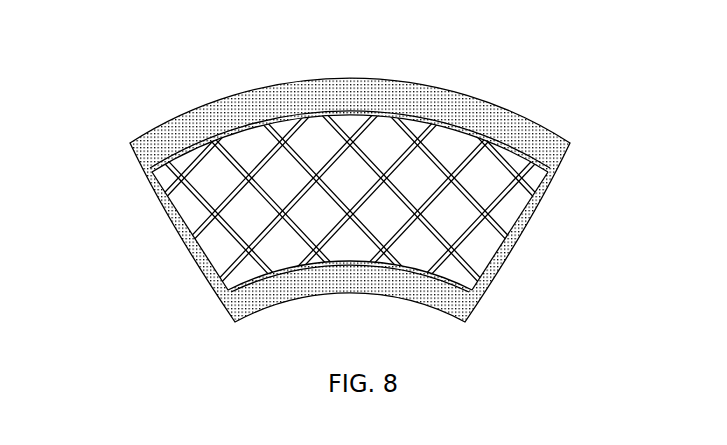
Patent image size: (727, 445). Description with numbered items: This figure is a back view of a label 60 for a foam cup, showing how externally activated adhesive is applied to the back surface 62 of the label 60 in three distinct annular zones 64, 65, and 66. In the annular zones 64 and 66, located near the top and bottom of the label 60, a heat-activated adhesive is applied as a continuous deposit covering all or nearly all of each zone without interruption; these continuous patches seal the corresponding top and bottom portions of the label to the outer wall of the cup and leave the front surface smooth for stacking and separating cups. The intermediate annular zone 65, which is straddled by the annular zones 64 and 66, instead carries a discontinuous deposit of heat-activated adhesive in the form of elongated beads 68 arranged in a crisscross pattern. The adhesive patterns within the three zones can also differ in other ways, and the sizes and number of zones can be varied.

The label 60 is at (199, 106).
The back surface 62 is at (505, 208).
The annular zone 64 is at (507, 118).
The annular zone 65 is at (185, 203).
The annular zone 66 is at (478, 302).
The elongated beads 68 is at (370, 122).